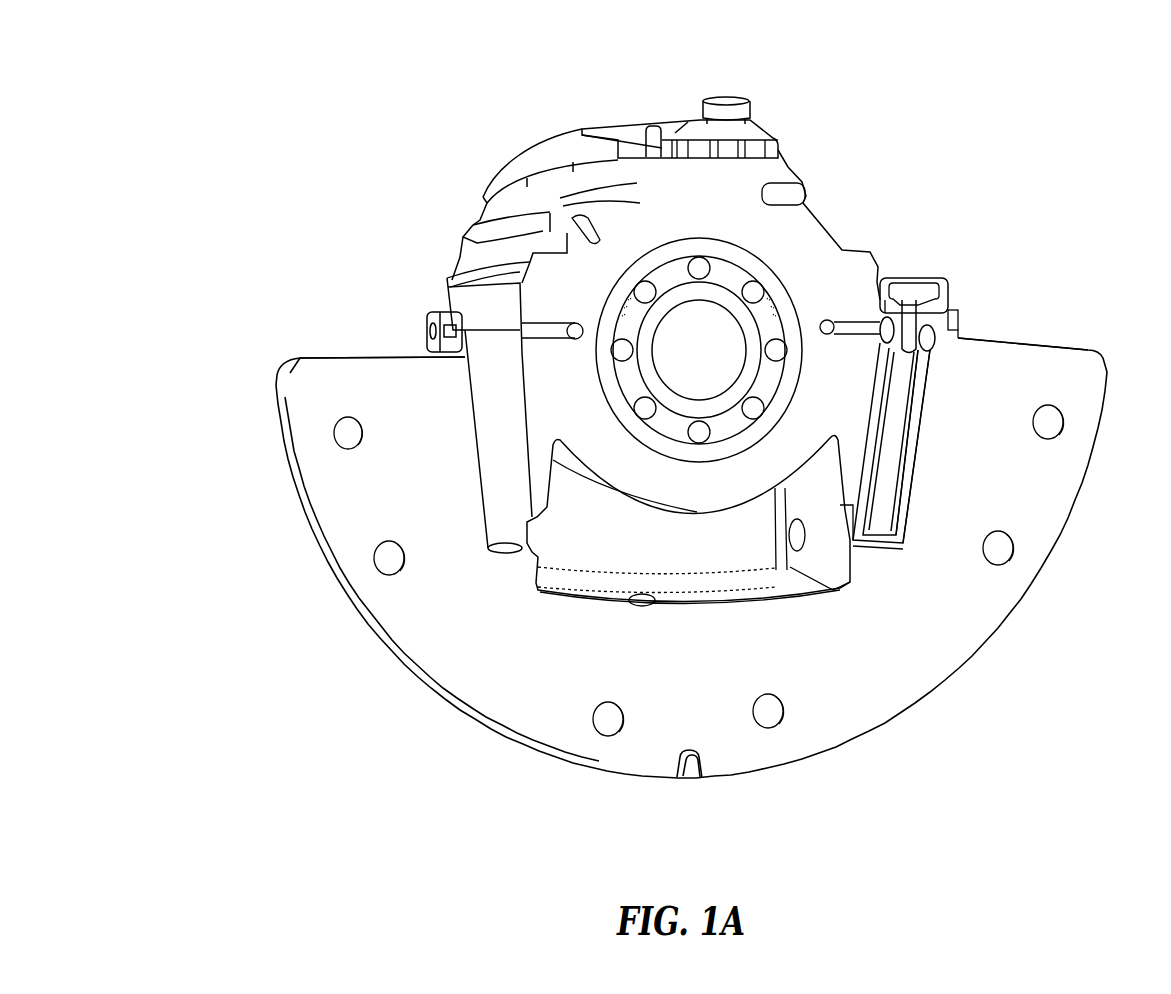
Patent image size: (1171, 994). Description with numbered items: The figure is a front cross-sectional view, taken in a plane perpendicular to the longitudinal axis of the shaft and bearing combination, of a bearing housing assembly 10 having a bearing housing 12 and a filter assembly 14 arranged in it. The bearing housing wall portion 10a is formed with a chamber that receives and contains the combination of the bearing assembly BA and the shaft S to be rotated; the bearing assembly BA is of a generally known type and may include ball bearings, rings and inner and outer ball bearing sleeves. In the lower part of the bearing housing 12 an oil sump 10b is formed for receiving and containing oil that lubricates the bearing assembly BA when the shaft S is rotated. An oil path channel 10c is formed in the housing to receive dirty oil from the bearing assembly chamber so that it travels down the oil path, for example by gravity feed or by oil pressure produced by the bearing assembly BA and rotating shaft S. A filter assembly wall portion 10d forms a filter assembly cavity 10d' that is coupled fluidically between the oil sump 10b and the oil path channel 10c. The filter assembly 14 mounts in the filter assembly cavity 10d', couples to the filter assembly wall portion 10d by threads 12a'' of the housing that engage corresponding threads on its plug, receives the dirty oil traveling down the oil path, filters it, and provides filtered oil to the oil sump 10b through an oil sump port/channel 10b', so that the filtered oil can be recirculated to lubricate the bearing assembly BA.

The bearing housing assembly 10 is at (886, 746).
The bearing housing wall portion 10a is at (608, 285).
The oil sump 10b is at (542, 555).
The oil sump port/channel 10b' is at (598, 669).
The oil path channel 10c is at (820, 328).
The filter assembly wall portion 10d is at (1033, 442).
The filter assembly cavity 10d' is at (1037, 446).
The bearing housing 12 is at (318, 390).
The threads 12a'' is at (642, 164).
The filter assembly 14 is at (853, 323).
The bearing assembly BA is at (600, 384).
The shaft S is at (697, 378).